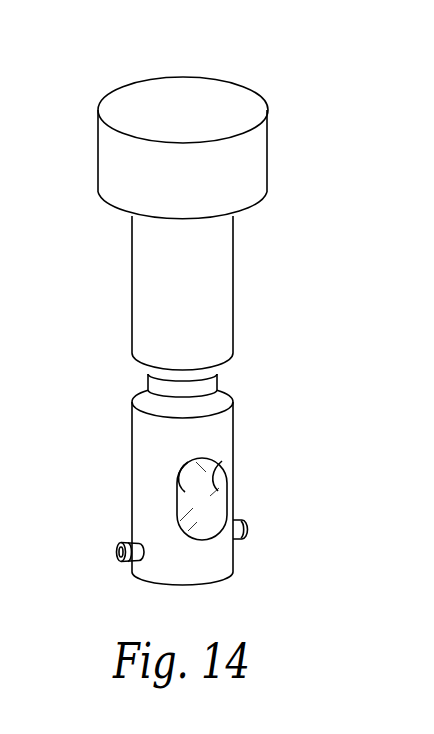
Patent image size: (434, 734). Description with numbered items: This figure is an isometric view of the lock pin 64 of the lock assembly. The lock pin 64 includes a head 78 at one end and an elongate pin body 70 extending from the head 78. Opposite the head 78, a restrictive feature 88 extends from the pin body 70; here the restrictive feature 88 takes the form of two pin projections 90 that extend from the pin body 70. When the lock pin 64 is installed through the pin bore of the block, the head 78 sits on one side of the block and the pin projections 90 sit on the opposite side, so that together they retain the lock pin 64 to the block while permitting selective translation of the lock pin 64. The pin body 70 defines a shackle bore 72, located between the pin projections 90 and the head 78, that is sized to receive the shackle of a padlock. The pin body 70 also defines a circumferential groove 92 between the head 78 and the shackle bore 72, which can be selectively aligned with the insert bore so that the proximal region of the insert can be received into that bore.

The lock pin 64 is at (205, 314).
The head 78 is at (266, 157).
The pin body 70 is at (233, 284).
The circumferential groove 92 is at (217, 378).
The shackle bore 72 is at (218, 460).
The restrictive feature 88 is at (252, 526).
The pin projections 90 is at (117, 554).